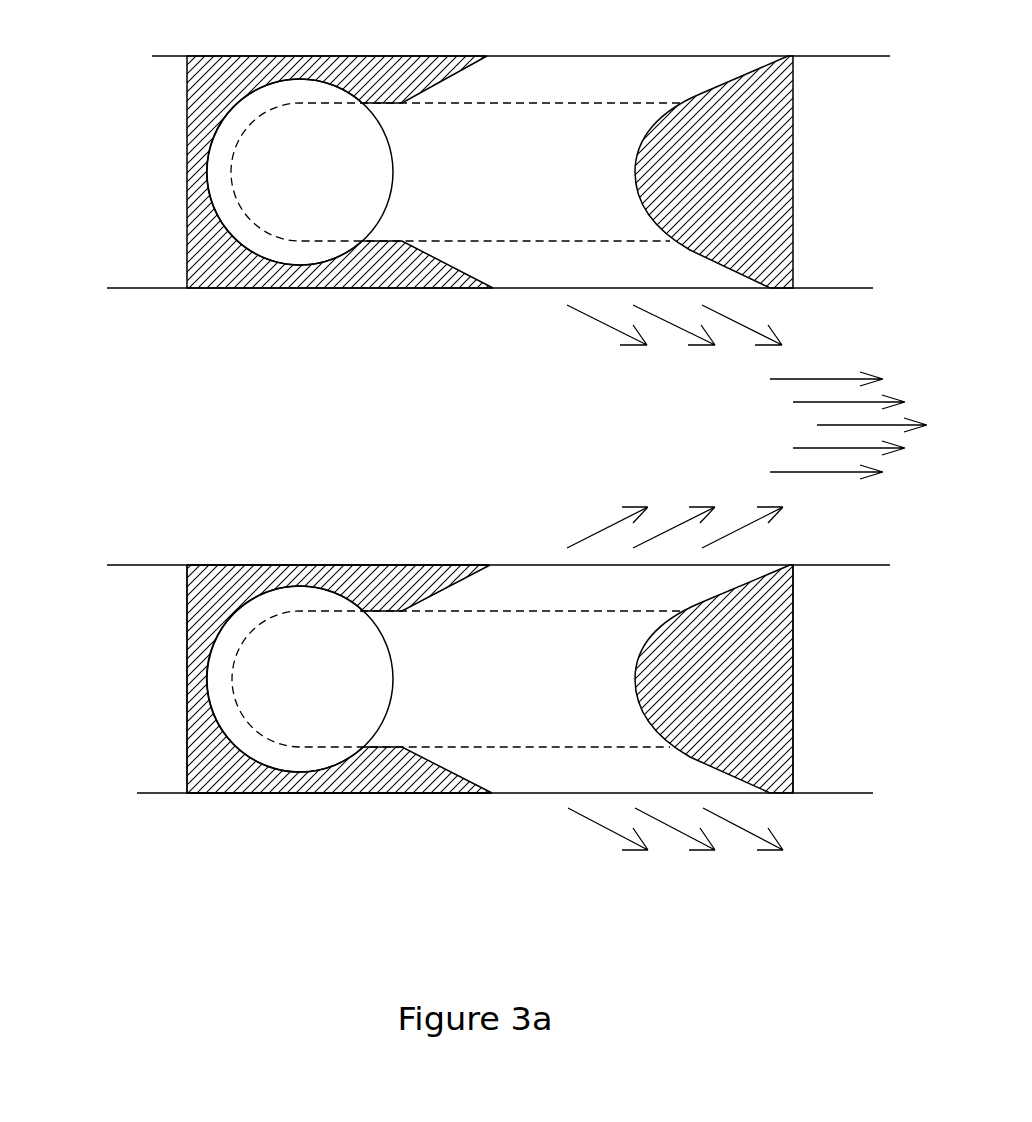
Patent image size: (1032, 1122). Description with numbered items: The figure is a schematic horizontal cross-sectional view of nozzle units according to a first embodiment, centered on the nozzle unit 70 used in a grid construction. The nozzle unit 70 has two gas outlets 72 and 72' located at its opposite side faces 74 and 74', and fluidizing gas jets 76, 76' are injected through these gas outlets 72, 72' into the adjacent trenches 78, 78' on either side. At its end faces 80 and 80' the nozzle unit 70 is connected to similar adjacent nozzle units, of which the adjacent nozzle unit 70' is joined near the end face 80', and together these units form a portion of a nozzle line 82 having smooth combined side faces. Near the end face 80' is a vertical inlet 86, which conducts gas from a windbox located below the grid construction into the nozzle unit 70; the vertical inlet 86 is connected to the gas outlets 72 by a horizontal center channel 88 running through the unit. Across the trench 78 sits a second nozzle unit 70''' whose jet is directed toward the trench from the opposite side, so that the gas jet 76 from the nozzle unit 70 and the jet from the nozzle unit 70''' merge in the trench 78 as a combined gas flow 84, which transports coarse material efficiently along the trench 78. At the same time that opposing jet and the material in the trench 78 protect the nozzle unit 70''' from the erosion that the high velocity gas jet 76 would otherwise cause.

The nozzle unit 70 is at (493, 693).
The adjacent nozzle unit 70' is at (123, 557).
The nozzle unit 70''' is at (498, 222).
The gas outlet 72 is at (634, 623).
The gas outlet 72' is at (508, 844).
The side face 74 is at (338, 518).
The side face 74' is at (339, 840).
The fluidizing gas jet 76 is at (675, 498).
The fluidizing gas jet 76' is at (675, 854).
The trench 78 is at (136, 403).
The trench 78' is at (139, 868).
The end face 80 is at (846, 679).
The end face 80' is at (136, 679).
The nozzle line 82 is at (160, 680).
The combined gas flow 84 is at (810, 403).
The vertical inlet 86 is at (267, 640).
The horizontal center channel 88 is at (455, 650).